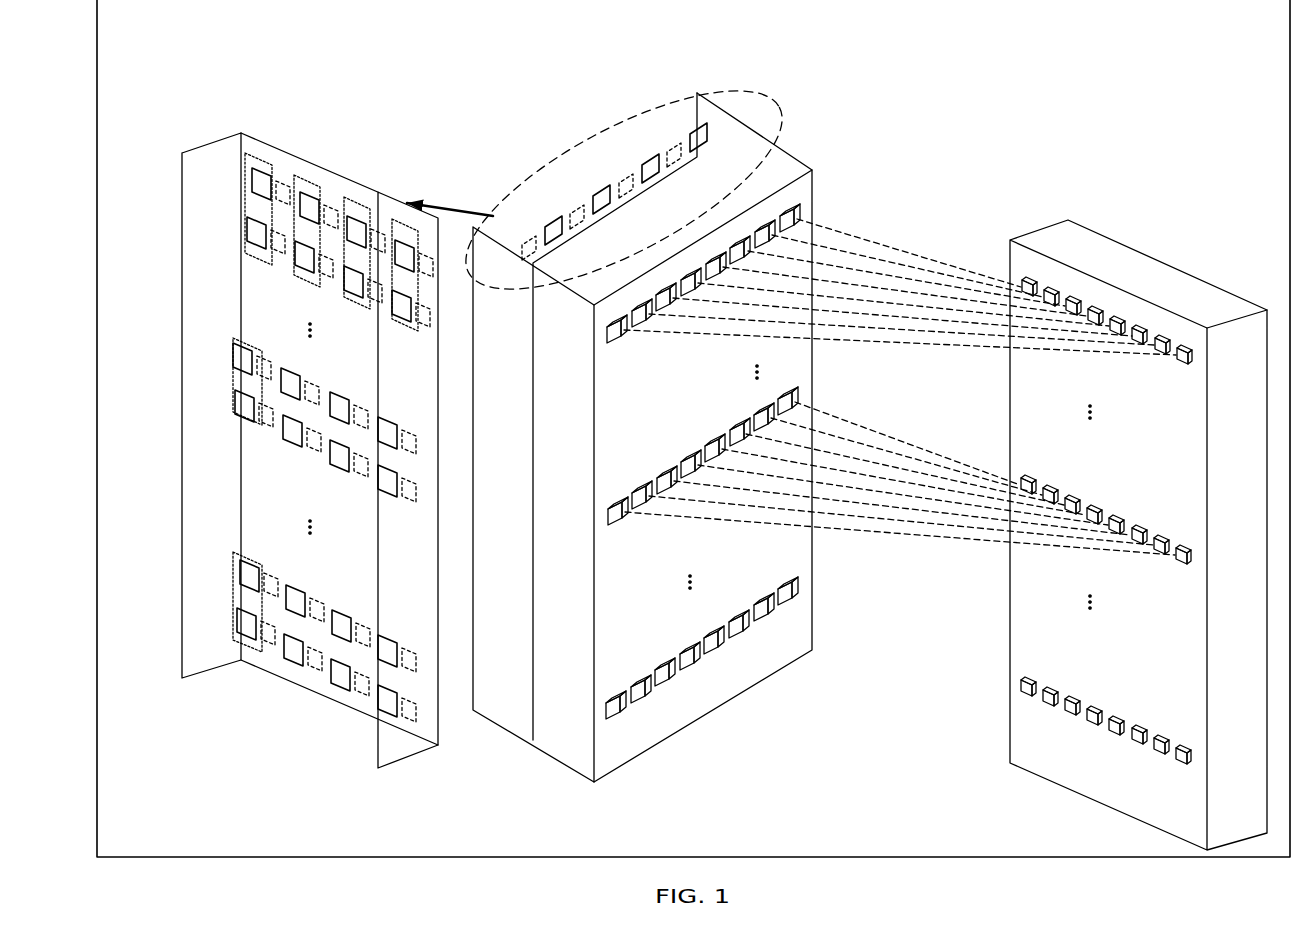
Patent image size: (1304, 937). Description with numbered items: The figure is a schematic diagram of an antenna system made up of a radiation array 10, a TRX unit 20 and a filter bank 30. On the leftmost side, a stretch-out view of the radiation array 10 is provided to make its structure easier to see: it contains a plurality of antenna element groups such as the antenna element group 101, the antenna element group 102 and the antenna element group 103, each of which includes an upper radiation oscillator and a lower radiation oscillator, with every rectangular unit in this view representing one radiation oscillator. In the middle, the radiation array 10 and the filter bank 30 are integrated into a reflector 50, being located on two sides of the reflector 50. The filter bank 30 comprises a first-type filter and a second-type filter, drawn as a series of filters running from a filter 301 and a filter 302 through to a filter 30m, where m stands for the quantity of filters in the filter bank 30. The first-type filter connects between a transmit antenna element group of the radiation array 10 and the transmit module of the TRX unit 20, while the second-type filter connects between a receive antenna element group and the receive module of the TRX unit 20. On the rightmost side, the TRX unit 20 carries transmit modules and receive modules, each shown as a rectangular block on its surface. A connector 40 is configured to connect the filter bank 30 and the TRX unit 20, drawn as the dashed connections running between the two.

The antenna element group 101 is at (232, 182).
The antenna element group 102 is at (277, 190).
The antenna element group 103 is at (433, 155).
The radiation array 10 is at (587, 132).
The filter bank 30 is at (780, 404).
The filter 301 is at (622, 334).
The filter 302 is at (637, 325).
The filter 30m is at (786, 612).
The connector 40 is at (958, 268).
The TRX unit 20 is at (1165, 272).
The reflector 50 is at (627, 740).